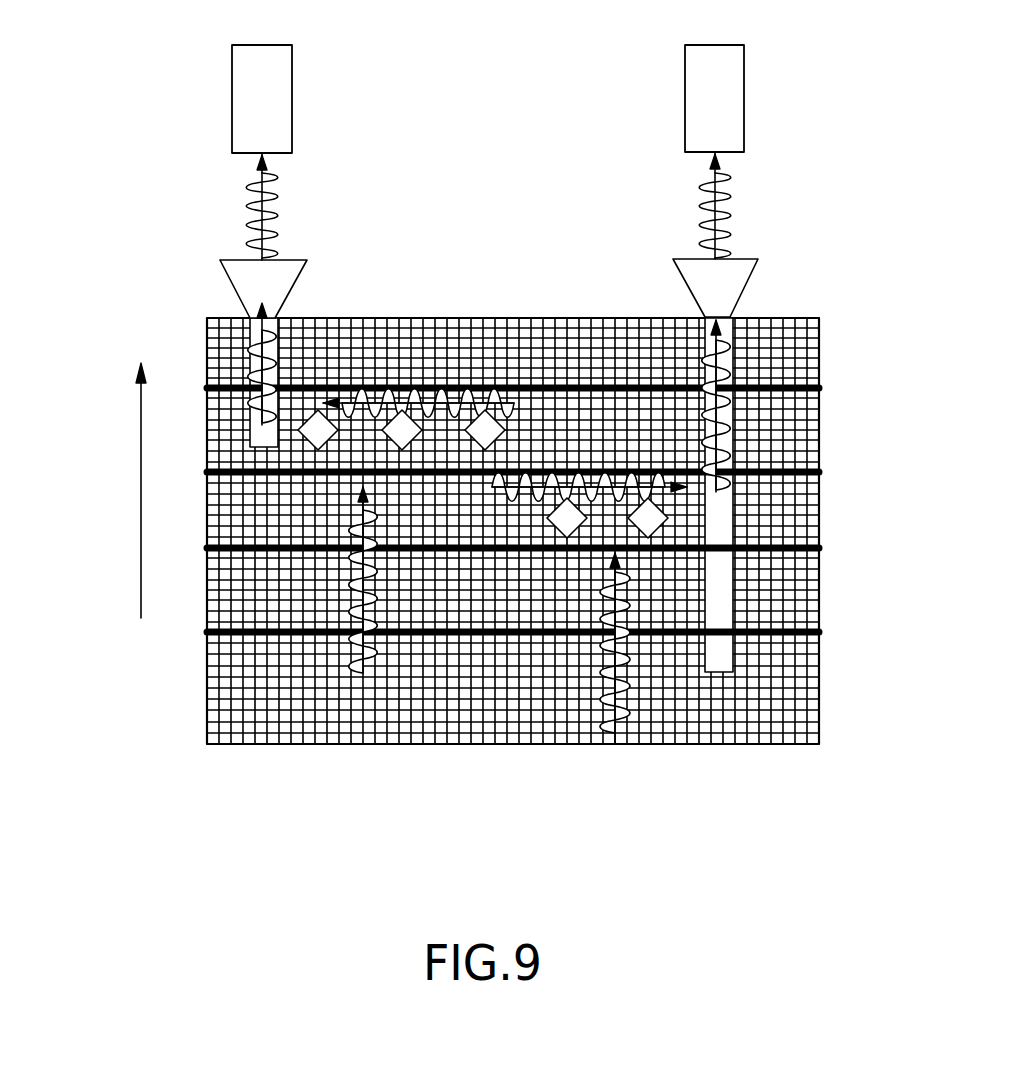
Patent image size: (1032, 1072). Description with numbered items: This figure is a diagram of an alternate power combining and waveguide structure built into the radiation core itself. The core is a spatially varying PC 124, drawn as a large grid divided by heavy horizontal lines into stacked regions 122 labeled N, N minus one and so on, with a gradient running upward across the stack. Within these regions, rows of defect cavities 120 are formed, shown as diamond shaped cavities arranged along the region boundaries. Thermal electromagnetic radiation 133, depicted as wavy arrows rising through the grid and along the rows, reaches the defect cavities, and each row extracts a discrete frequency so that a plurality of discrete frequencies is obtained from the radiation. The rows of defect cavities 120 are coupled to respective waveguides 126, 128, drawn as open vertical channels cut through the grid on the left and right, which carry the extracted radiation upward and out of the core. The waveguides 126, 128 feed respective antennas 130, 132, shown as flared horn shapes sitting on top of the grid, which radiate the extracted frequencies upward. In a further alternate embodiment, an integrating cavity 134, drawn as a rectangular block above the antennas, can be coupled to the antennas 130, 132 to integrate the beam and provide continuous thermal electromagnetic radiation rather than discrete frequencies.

The rows of defect cavities 120 is at (84, 490).
The regions 122 is at (818, 415).
The spatially varying PC 124 is at (775, 745).
The waveguide 126 is at (262, 365).
The waveguide 128 is at (733, 353).
The antenna 130 is at (234, 288).
The antenna 132 is at (742, 290).
The thermal electromagnetic radiation 133 is at (606, 677).
The integrating cavity 134 is at (744, 103).